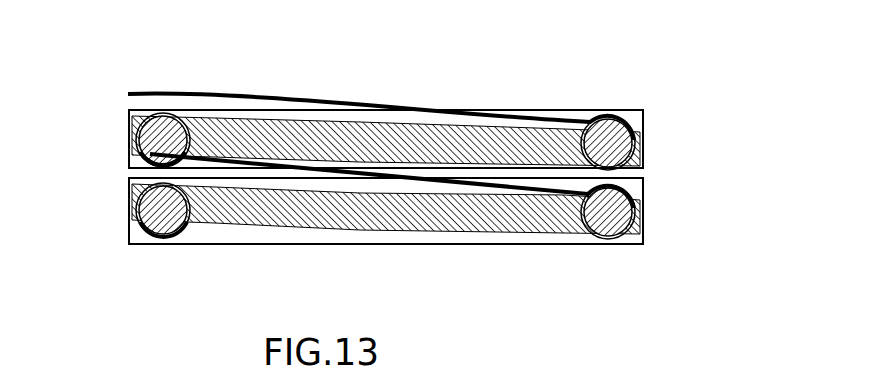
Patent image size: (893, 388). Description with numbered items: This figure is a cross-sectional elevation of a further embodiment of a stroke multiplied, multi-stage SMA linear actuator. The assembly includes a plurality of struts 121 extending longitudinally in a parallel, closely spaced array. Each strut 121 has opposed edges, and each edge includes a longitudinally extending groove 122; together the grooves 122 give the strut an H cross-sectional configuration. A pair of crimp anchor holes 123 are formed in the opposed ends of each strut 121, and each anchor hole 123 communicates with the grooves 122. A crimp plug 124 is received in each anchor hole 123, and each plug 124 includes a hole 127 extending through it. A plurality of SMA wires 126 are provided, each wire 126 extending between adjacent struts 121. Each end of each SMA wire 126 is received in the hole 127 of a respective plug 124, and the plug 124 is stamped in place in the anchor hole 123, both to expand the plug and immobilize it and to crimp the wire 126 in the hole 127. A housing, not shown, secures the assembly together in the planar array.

The strut 121 is at (328, 135).
The groove 122 is at (543, 113).
The crimp anchor hole 123 is at (644, 146).
The crimp plug 124 is at (129, 178).
The SMA wire 126 is at (247, 92).
The hole 127 is at (170, 235).